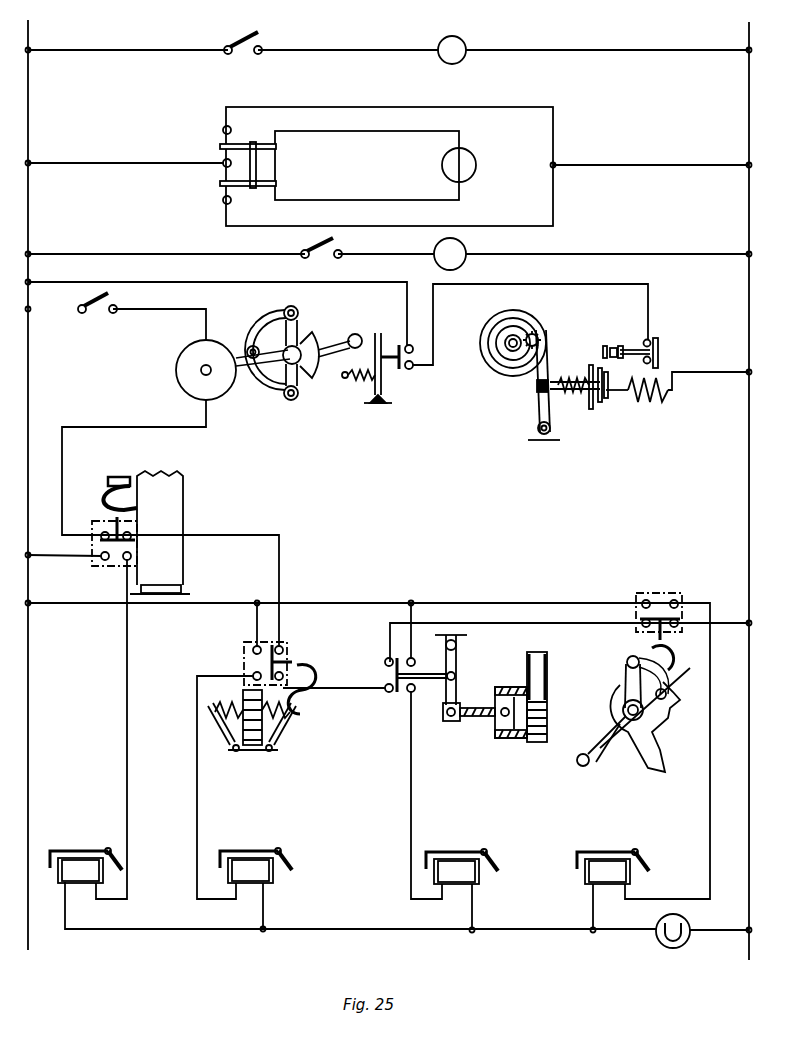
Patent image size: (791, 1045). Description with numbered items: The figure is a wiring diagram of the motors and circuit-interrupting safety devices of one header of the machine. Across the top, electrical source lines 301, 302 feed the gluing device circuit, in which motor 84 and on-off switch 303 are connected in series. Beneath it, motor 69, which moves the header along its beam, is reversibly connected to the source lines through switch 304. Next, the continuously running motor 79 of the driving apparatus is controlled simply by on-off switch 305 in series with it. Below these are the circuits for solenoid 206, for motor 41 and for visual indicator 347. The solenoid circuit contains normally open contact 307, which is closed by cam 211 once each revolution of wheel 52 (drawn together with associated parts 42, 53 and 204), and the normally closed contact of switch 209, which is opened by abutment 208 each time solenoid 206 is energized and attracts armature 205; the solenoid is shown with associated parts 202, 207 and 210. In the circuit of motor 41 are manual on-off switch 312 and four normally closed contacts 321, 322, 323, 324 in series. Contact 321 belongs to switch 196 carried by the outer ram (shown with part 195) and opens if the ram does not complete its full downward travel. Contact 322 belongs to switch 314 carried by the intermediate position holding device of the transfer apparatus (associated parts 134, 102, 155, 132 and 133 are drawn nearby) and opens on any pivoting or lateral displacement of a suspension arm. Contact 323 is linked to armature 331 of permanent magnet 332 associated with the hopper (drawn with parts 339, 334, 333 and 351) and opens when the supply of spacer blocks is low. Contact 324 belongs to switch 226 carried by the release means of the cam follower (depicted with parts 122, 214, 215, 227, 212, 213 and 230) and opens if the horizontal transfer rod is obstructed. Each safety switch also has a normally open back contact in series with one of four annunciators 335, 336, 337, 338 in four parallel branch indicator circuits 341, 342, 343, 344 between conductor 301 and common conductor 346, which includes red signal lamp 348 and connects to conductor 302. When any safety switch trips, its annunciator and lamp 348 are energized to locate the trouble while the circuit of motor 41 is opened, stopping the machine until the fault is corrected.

The electrical source line 301 is at (30, 46).
The electrical source line 302 is at (748, 42).
The on-off switch 303 is at (243, 45).
The motor 84 is at (461, 42).
The switch 304 is at (262, 167).
The motor 69 is at (477, 160).
The on-off switch 305 is at (316, 250).
The motor 79 is at (464, 250).
The manual on-off switch 312 is at (88, 304).
The motor 41 is at (178, 373).
The connecting rod 42 is at (250, 372).
The wheel 52 is at (260, 328).
The pin 53 is at (292, 400).
The cam 211 is at (352, 349).
The normally open contact 307 is at (390, 334).
The lever 204 is at (400, 370).
The cam disc 202 is at (568, 312).
The ratchet 207 is at (538, 336).
The abutment 208 is at (612, 345).
The switch 209 is at (660, 354).
The rod 210 is at (574, 400).
The armature 205 is at (626, 402).
The solenoid 206 is at (672, 392).
The normally closed contact 321 is at (134, 543).
The contact spring 195 is at (106, 484).
The switch 196 is at (98, 563).
The switch 314 is at (276, 648).
The normally closed contact 322 is at (244, 663).
The spring 134 is at (312, 672).
The solenoid 102 is at (243, 698).
The solenoid coil 155 is at (250, 750).
The arm 132 is at (220, 742).
The arm 133 is at (290, 738).
The normally closed contact 323 is at (386, 684).
The lever 339 is at (454, 705).
The armature 331 is at (452, 722).
The rod 334 is at (472, 718).
The permanent magnet 332 is at (506, 740).
The piston 333 is at (506, 686).
The solenoid 351 is at (546, 674).
The normally closed contact 324 is at (660, 602).
The switch 226 is at (642, 596).
The segment 122 is at (656, 750).
The arm 214 is at (626, 680).
The pin 215 is at (634, 656).
The pawl 227 is at (664, 664).
The arm 212 is at (606, 752).
The pin 213 is at (580, 766).
The link 230 is at (614, 714).
The branch indicator circuit 341 is at (124, 740).
The branch indicator circuit 342 is at (196, 810).
The branch indicator circuit 343 is at (410, 810).
The branch indicator circuit 344 is at (708, 802).
The visual indicator 347 is at (370, 882).
The common conductor 346 is at (620, 934).
The electrical annunciator 335 is at (78, 860).
The electrical annunciator 336 is at (248, 860).
The electrical annunciator 337 is at (454, 860).
The electrical annunciator 338 is at (606, 860).
The red signal lamp 348 is at (670, 950).